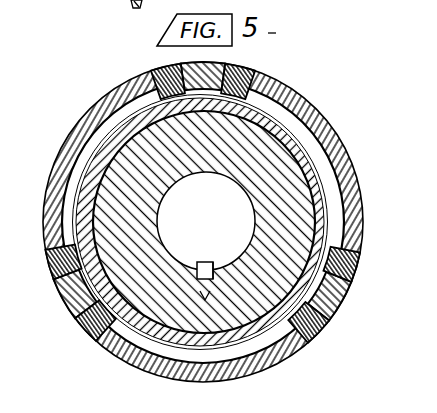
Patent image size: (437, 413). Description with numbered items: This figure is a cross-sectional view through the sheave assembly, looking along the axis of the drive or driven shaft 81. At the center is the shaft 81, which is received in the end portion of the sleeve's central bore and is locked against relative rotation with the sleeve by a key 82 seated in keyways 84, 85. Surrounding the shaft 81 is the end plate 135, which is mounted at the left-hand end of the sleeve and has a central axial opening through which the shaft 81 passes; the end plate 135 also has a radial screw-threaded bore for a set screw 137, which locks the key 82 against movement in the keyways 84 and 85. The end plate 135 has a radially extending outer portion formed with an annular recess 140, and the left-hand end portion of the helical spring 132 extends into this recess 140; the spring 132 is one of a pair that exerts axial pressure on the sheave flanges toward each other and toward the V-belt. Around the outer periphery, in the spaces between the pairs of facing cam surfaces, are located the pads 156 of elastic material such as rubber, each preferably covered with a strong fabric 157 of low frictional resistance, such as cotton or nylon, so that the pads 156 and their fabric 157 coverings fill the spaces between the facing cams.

The shaft 81 is at (206, 221).
The key 82 is at (196, 263).
The keyway 84 is at (208, 260).
The keyway 85 is at (214, 275).
The helical spring 132 is at (92, 138).
The end plate 135 is at (283, 152).
The set screw 137 is at (207, 282).
The annular recess 140 is at (119, 109).
The pad 156 is at (255, 65).
The fabric 157 is at (233, 62).